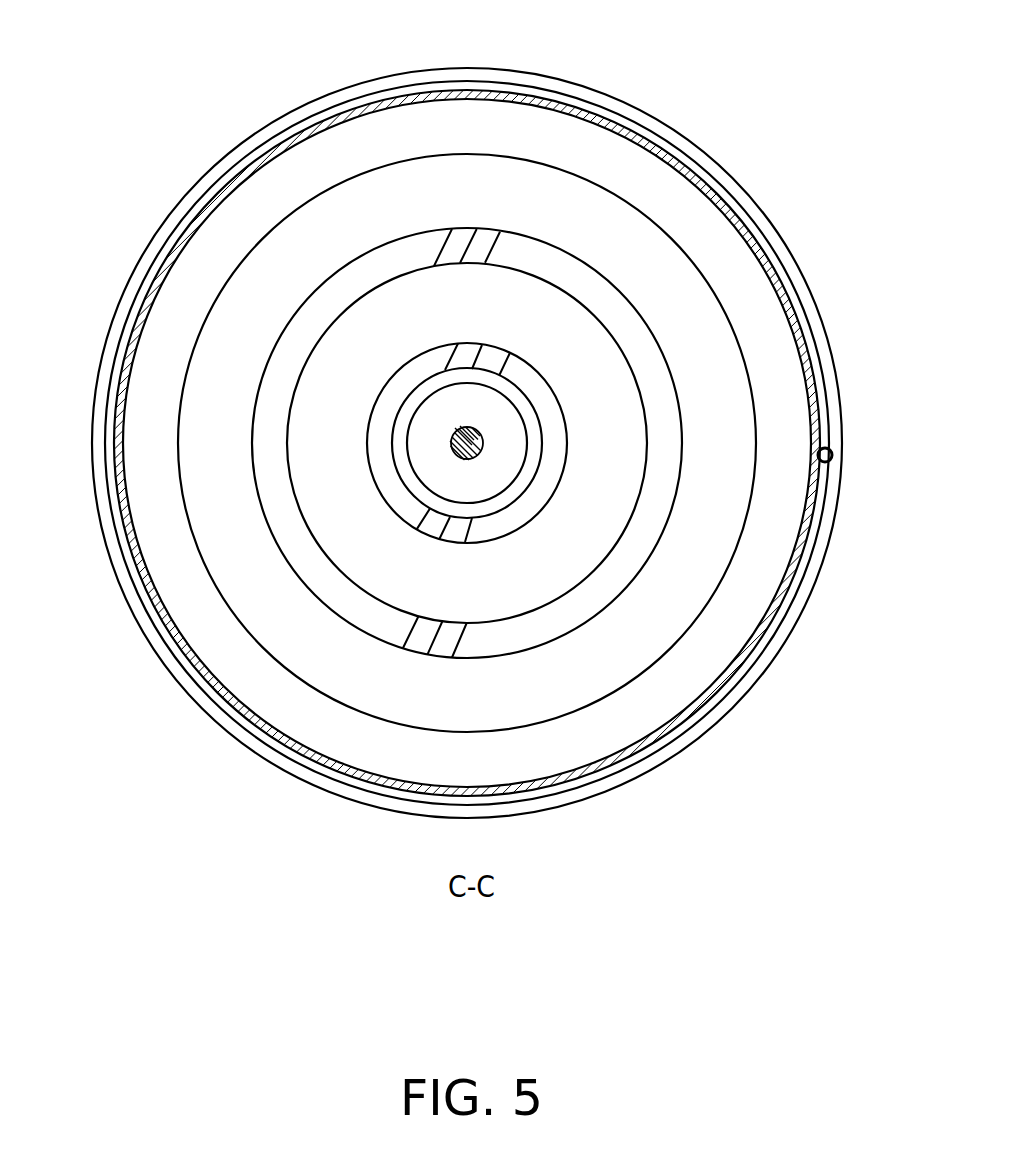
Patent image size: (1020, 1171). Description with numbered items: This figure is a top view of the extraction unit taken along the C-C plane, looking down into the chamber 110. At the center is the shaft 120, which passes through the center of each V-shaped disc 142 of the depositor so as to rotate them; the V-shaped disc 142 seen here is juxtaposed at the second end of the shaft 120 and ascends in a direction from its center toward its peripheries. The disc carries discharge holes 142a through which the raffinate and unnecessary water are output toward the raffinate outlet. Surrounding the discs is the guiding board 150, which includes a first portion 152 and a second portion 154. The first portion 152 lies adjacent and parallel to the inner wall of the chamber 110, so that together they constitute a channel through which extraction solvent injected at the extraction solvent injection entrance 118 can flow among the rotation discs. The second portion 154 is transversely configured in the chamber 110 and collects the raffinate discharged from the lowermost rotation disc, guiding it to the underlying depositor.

The chamber 110 is at (836, 414).
The extraction solvent injection entrance 118 is at (834, 455).
The shaft 120 is at (465, 430).
The V-shaped disc 142 is at (338, 243).
The discharge hole 142a is at (407, 383).
The guiding board 150 is at (510, 555).
The first portion 152 is at (782, 285).
The second portion 154 is at (762, 315).